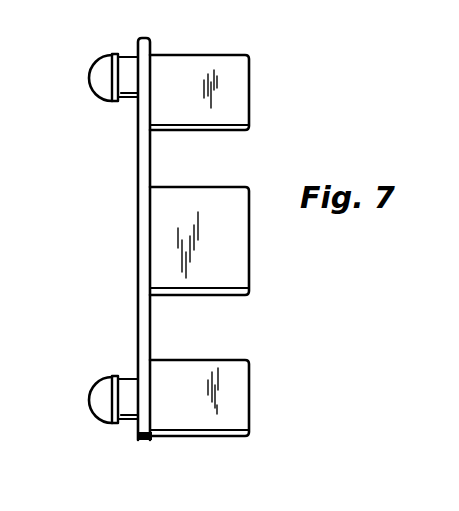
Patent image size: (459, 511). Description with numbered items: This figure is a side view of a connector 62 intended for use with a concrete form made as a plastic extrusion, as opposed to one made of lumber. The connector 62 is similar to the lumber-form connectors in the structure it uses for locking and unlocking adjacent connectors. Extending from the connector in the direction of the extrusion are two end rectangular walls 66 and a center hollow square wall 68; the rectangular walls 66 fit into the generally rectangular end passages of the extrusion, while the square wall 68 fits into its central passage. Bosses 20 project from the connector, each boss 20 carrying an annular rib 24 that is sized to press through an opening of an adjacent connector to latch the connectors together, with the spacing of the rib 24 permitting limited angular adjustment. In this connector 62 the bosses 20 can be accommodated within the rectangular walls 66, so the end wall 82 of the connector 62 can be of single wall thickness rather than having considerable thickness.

The boss 20 is at (95, 92).
The annular rib 24 is at (112, 100).
The connector 62 is at (133, 270).
The end rectangular wall 66 is at (249, 115).
The center hollow square wall 68 is at (249, 247).
The end wall 82 is at (146, 441).